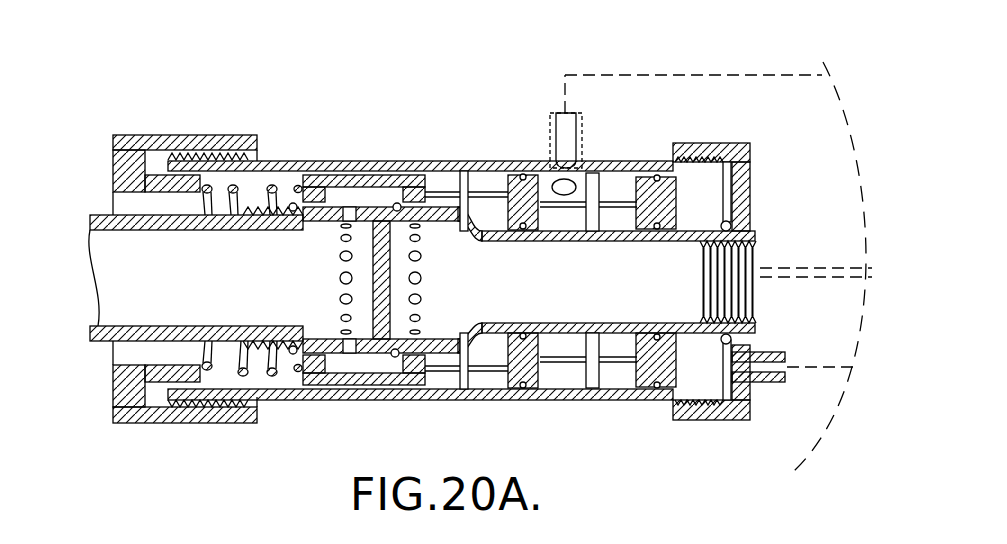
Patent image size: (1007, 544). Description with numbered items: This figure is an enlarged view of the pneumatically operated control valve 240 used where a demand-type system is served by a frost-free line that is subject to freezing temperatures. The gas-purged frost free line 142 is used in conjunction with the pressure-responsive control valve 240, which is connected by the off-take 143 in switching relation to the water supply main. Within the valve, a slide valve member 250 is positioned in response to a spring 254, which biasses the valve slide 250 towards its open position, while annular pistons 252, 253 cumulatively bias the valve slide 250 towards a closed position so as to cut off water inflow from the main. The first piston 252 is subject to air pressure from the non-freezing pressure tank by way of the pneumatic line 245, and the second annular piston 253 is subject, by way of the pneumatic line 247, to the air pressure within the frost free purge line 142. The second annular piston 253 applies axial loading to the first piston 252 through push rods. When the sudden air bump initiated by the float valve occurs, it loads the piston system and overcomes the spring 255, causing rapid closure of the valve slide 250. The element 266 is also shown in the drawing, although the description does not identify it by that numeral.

The pneumatically operated control valve 240 is at (459, 100).
The pneumatic line 245 is at (638, 75).
The spring 255 is at (260, 160).
The slide valve member 250 is at (332, 178).
The annular piston 252 is at (493, 176).
The second annular piston 253 is at (613, 192).
The gas-purged frost free line 142 is at (797, 268).
The off-take 143 is at (97, 343).
The spring 254 is at (467, 398).
The valve member 266 is at (562, 365).
The pneumatic line 247 is at (807, 370).